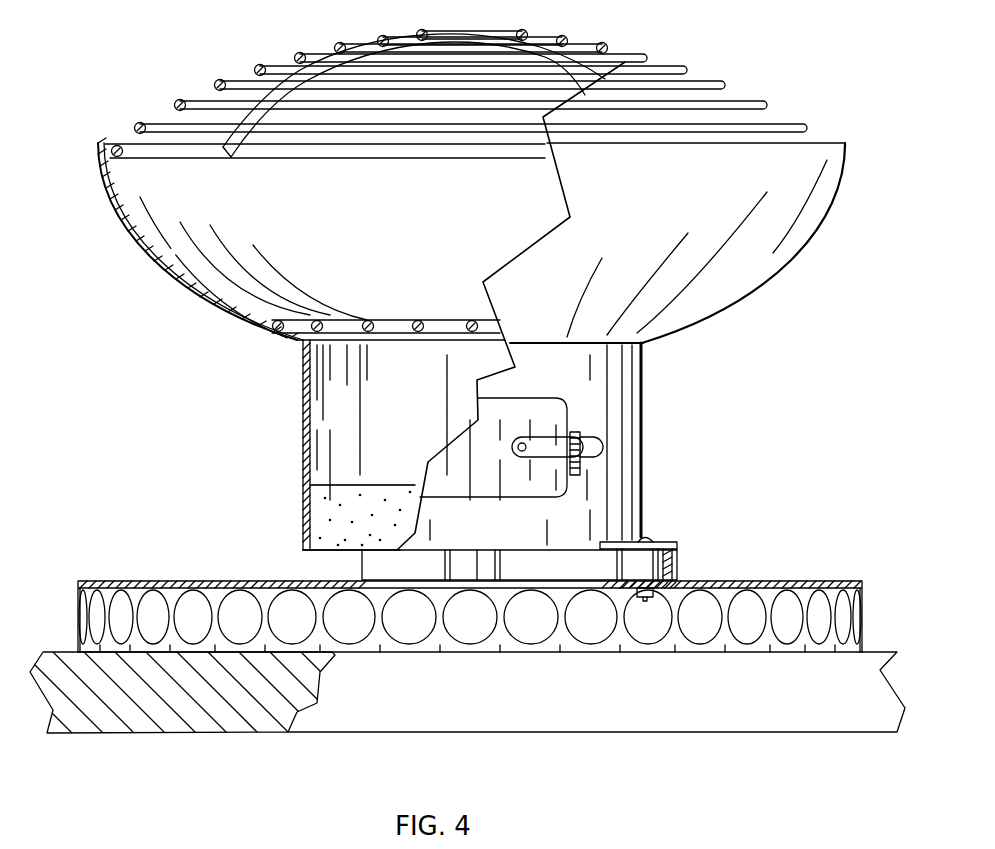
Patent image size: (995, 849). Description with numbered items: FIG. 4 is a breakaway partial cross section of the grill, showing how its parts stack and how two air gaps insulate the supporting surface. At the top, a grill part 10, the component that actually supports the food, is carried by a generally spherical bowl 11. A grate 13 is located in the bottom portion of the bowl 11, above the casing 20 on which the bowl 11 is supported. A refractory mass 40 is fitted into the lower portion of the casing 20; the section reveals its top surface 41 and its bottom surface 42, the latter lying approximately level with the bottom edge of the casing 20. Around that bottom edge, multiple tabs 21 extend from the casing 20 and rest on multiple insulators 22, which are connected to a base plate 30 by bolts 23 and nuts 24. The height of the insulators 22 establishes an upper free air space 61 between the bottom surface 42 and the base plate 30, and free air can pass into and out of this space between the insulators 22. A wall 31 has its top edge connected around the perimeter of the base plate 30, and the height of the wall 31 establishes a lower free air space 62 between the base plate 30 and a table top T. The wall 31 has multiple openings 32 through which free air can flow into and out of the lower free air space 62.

The grill part 10 is at (278, 64).
The bowl 11 is at (180, 290).
The grate 13 is at (468, 320).
The casing 20 is at (643, 402).
The tabs 21 is at (667, 540).
The insulators 22 is at (675, 567).
The bolts 23 is at (647, 537).
The nuts 24 is at (650, 597).
The base plate 30 is at (127, 581).
The wall 31 is at (565, 652).
The openings 32 is at (775, 623).
The refractory mass 40 is at (372, 512).
The top surface 41 is at (390, 483).
The bottom surface 42 is at (353, 551).
The upper free air space 61 is at (388, 568).
The lower free air space 62 is at (290, 627).
The table top T is at (62, 649).